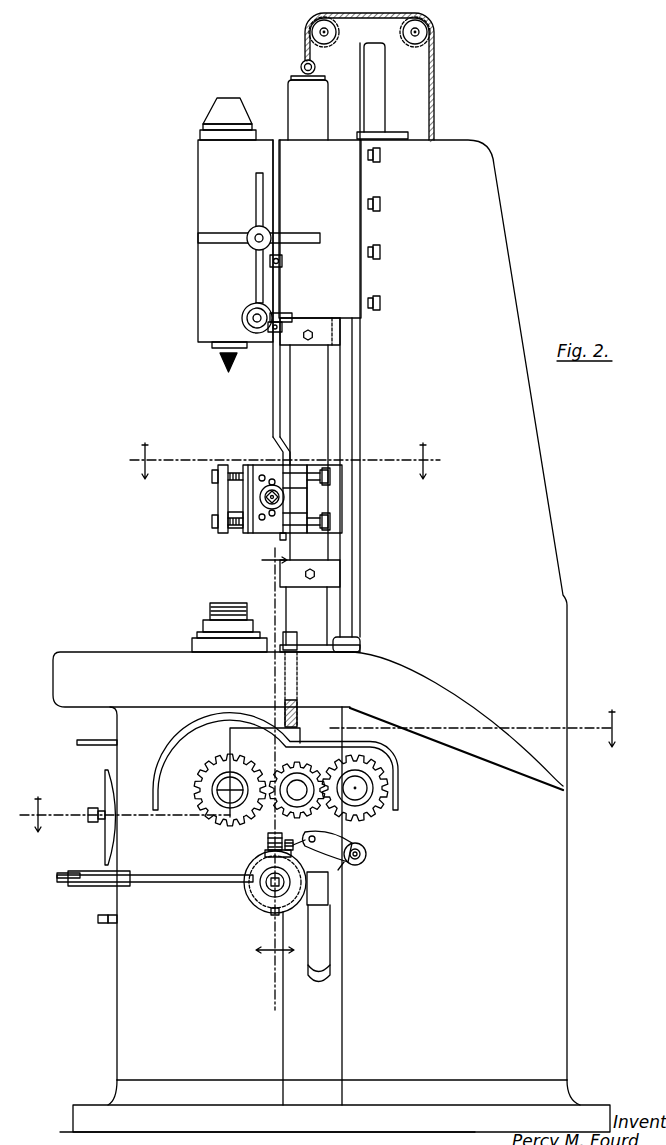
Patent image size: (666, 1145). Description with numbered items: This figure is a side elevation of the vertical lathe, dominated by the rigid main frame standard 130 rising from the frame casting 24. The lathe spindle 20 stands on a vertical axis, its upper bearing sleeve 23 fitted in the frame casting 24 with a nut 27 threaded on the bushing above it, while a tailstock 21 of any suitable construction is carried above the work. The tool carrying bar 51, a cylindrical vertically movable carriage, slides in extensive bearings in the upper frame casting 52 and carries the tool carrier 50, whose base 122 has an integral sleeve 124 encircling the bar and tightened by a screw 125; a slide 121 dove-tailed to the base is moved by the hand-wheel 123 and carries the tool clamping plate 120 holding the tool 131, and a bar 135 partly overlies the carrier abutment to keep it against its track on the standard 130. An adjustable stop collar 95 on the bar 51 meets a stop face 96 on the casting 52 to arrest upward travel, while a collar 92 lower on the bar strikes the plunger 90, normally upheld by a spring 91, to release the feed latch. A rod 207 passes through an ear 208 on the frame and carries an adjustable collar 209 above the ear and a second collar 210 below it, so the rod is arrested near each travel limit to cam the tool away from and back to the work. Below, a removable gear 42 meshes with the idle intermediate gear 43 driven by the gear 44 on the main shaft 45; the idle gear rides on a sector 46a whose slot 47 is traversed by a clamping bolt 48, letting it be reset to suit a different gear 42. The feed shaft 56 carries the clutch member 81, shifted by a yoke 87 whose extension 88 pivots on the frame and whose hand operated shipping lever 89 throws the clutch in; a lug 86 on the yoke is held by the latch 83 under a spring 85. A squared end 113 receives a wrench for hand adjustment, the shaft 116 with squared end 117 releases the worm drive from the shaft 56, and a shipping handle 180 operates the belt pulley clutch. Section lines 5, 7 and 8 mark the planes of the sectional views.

The tailstock 21 is at (205, 296).
The upper frame casting 52 is at (285, 163).
The adjustable collar 209 is at (283, 261).
The ear 208 is at (282, 326).
The stop face 96 is at (303, 315).
The stop collar 95 is at (340, 333).
The tool carrying bar 51 is at (318, 370).
The bar 135 is at (340, 396).
The second adjustable collar 210 is at (268, 330).
The rod 207 is at (275, 400).
The main frame standard 130 is at (480, 264).
The section line 8- 8 is at (280, 461).
The tool clamping plate 120 is at (227, 489).
The slide 121 is at (240, 505).
The tool 131 is at (235, 532).
The hand-wheel 123 is at (268, 520).
The base 122 is at (283, 520).
The sleeve 124 is at (335, 477).
The tool carrier 50 is at (296, 498).
The tightening screw 125 is at (335, 522).
The section line 5- 5 is at (275, 775).
The collar 92 is at (300, 572).
The lathe spindle 20 is at (212, 607).
The nut 27 is at (200, 631).
The sleeve 23 is at (195, 641).
The frame casting 24 is at (108, 658).
The plunger 90 is at (293, 642).
The spring 91 is at (297, 706).
The shipping handle 180 is at (90, 747).
The gear 42 is at (210, 770).
The idle intermediate gear 43 is at (283, 768).
The gear 44 is at (365, 770).
The main shaft 45 is at (357, 790).
The sector 46a is at (360, 832).
The spring 85 is at (365, 843).
The clamping bolt 48 is at (367, 856).
The slot 47 is at (342, 865).
The latch 83 is at (268, 840).
The lug 86 is at (285, 846).
The yoke 87 is at (250, 868).
The shaft 56 is at (262, 886).
The clutch member 81 is at (258, 902).
The extension 88 is at (310, 888).
The shipping lever 89 is at (165, 882).
The squared end 113 is at (75, 887).
The squared end 117 is at (97, 920).
The shaft 116 is at (112, 926).
The section line 7- 7 is at (325, 771).